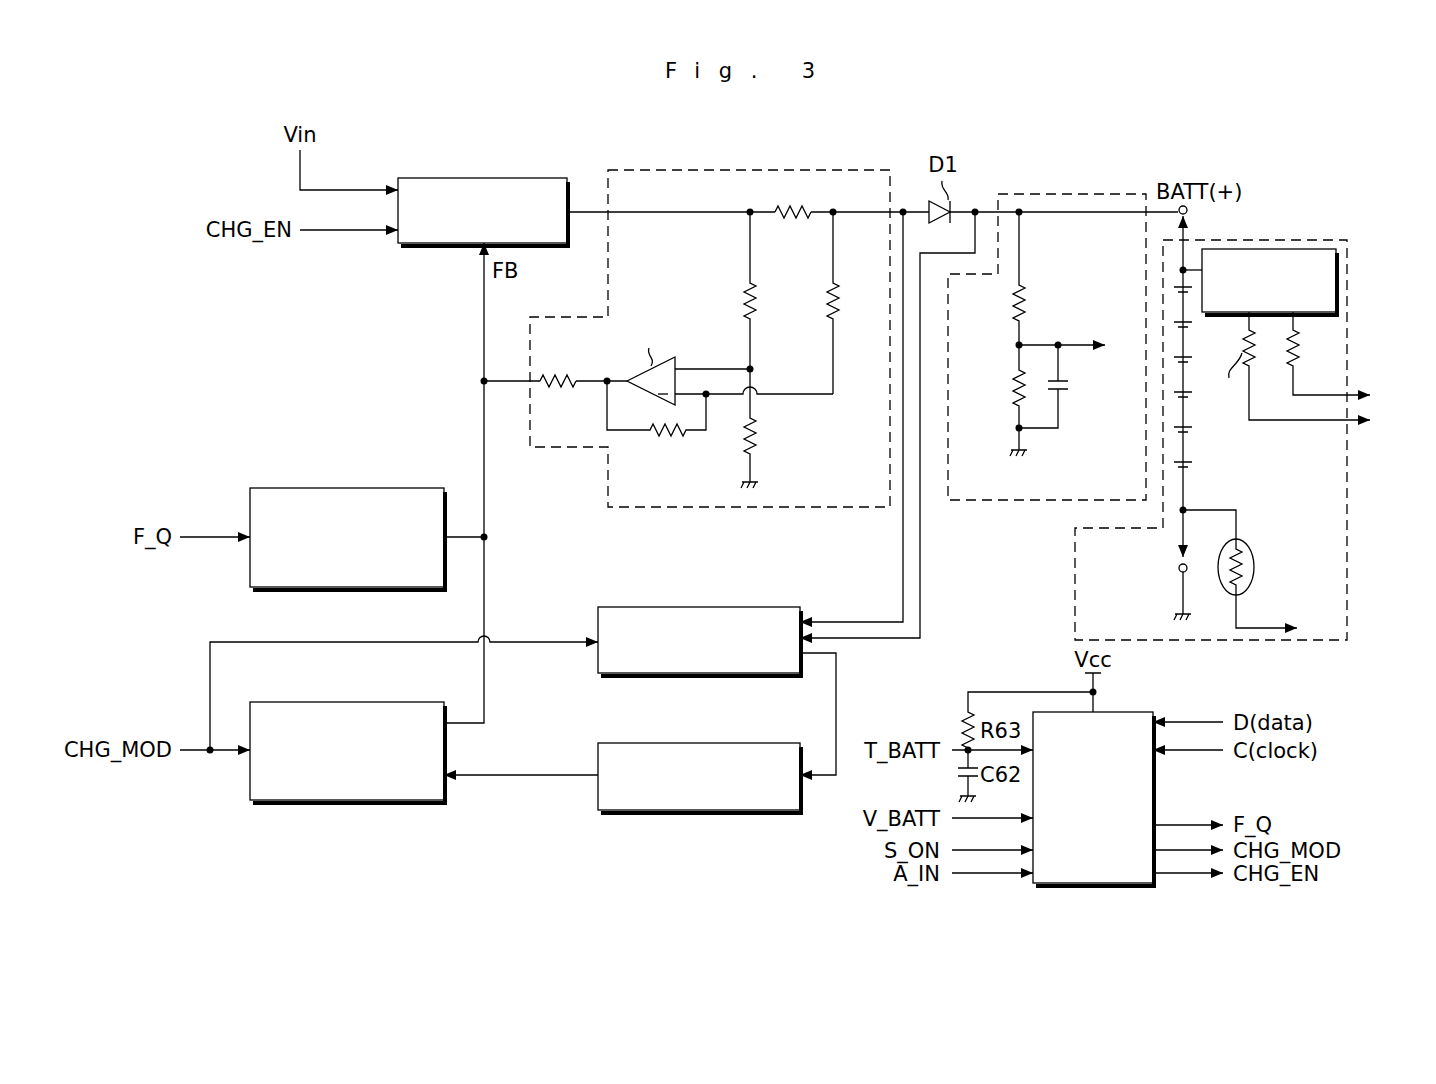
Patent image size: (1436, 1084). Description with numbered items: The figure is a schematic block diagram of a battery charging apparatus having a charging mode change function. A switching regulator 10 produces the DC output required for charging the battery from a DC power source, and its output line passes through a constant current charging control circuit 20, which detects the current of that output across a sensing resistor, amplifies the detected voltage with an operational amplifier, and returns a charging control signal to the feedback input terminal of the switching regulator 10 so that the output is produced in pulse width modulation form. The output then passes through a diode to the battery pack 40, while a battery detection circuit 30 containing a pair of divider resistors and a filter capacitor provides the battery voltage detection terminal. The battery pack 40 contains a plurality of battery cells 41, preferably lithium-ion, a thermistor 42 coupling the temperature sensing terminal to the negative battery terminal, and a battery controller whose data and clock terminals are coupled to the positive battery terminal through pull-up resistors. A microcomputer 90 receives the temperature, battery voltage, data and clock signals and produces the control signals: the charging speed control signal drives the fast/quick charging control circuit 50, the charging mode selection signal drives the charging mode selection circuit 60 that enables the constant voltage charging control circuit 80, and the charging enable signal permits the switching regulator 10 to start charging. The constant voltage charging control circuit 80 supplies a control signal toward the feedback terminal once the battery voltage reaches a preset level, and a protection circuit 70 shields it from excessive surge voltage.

The switching regulator 10 is at (483, 178).
The constant current charging control circuit 20 is at (693, 170).
The battery detection circuit 30 is at (1061, 194).
The battery pack 40 is at (1295, 240).
The battery cells 41 is at (1199, 448).
The thermistor 42 is at (1256, 550).
The fast/quick charging control circuit 50 is at (345, 488).
The charging mode selection circuit 60 is at (345, 702).
The protection circuit 70 is at (700, 607).
The constant voltage charging control circuit 80 is at (700, 743).
The microcomputer 90 is at (1085, 884).